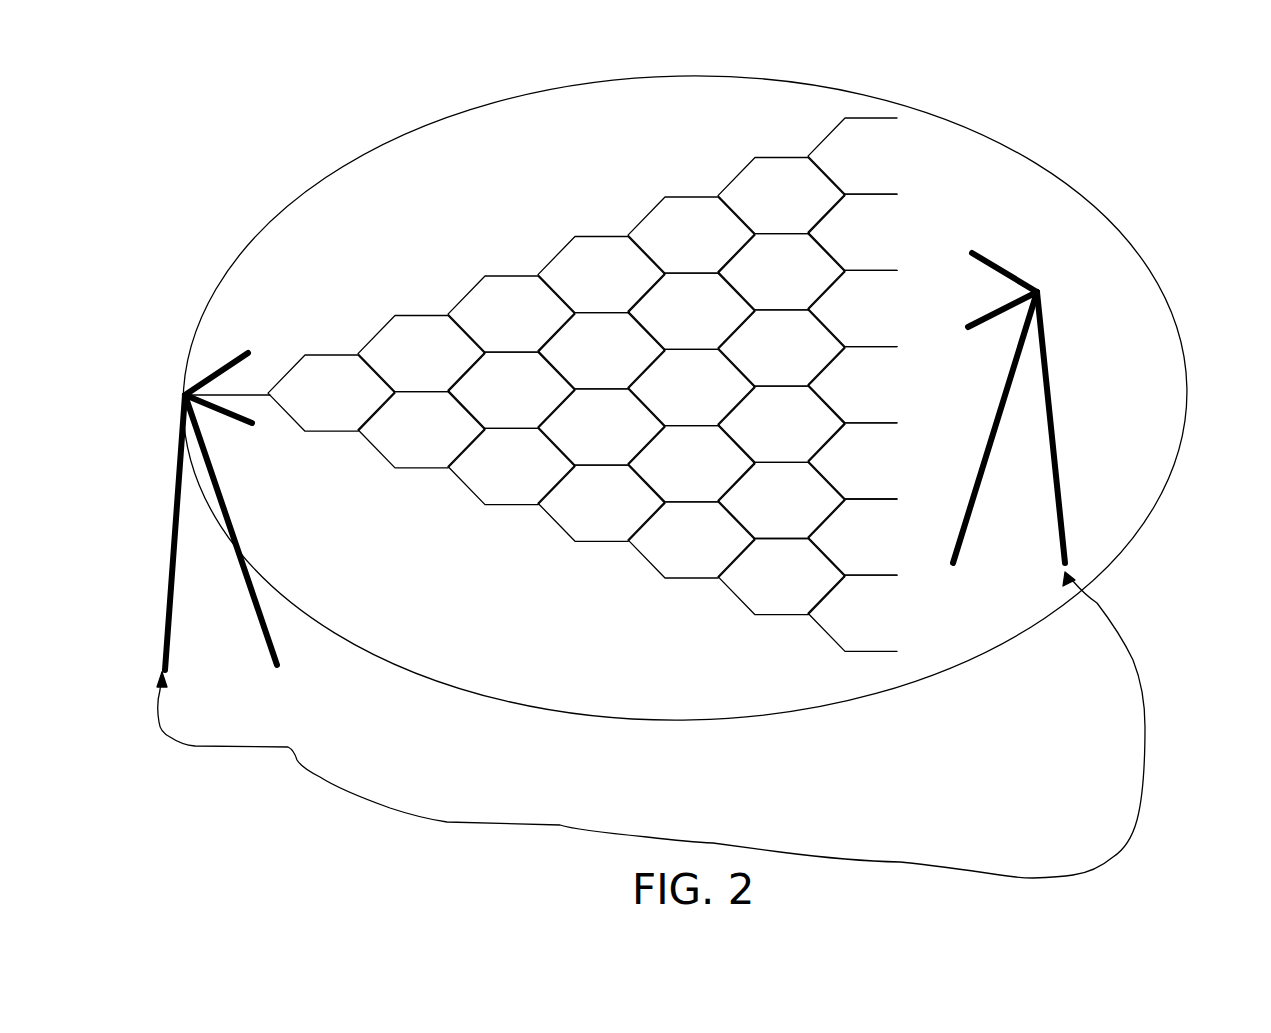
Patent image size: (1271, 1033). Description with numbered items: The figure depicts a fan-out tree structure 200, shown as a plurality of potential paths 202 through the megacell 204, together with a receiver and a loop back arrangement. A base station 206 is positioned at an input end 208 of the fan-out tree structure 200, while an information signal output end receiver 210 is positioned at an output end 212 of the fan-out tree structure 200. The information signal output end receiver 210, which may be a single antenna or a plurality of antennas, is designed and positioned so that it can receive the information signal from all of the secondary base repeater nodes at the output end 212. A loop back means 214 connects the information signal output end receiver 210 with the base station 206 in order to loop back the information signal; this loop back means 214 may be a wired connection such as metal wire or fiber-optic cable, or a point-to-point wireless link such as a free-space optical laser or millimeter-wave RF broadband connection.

The fan-out tree structure 200 is at (413, 435).
The potential paths 202 is at (530, 424).
The megacell 204 is at (598, 615).
The base station 206 is at (185, 470).
The input end 208 is at (307, 362).
The information signal output end receiver 210 is at (1052, 395).
The output end 212 is at (917, 583).
The loop back means 214 is at (1145, 773).